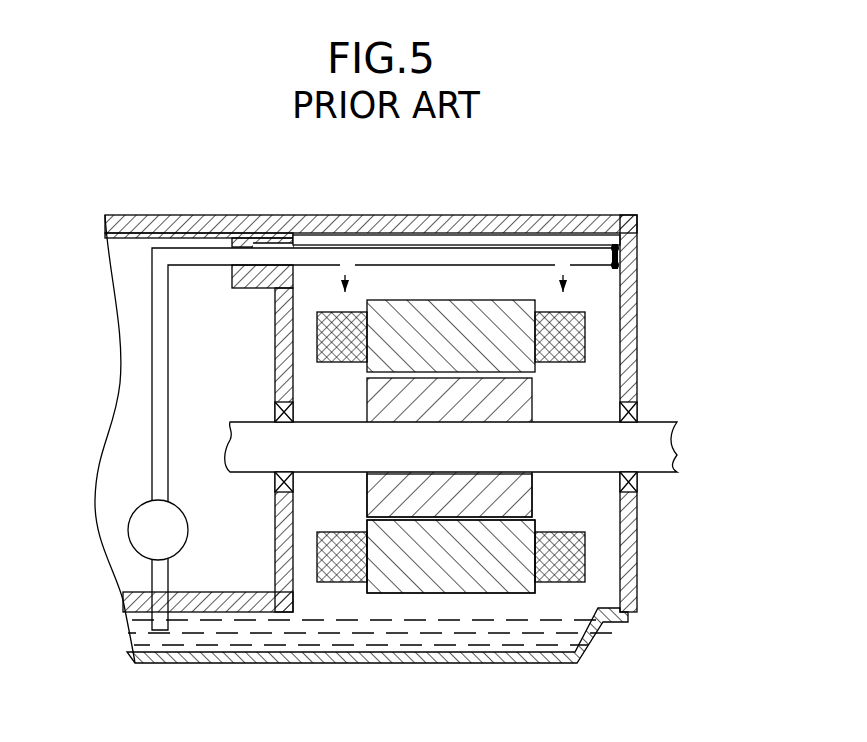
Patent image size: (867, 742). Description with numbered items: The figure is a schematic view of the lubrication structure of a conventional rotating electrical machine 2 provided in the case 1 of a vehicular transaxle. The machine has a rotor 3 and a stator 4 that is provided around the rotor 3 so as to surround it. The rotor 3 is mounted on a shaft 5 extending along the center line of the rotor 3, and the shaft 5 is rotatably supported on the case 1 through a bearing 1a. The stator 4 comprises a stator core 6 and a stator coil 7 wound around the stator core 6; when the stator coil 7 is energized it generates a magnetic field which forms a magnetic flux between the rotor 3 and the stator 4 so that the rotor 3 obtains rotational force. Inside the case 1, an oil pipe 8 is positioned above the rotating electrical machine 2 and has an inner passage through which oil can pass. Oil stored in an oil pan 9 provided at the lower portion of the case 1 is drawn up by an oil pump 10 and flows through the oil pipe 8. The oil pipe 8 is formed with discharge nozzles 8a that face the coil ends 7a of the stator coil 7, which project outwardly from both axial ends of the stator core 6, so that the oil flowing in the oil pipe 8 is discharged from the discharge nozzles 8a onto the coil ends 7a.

The case 1 is at (643, 545).
The bearing 1a is at (275, 412).
The rotating electrical machine 2 is at (540, 500).
The rotor 3 is at (368, 498).
The stator 4 is at (507, 577).
The shaft 5 is at (650, 473).
The stator core 6 is at (440, 594).
The stator coil 7 is at (340, 587).
The coil ends 7a is at (340, 363).
The oil pipe 8 is at (457, 247).
The discharge nozzles 8a is at (351, 266).
The oil pan 9 is at (592, 644).
The oil pump 10 is at (128, 527).